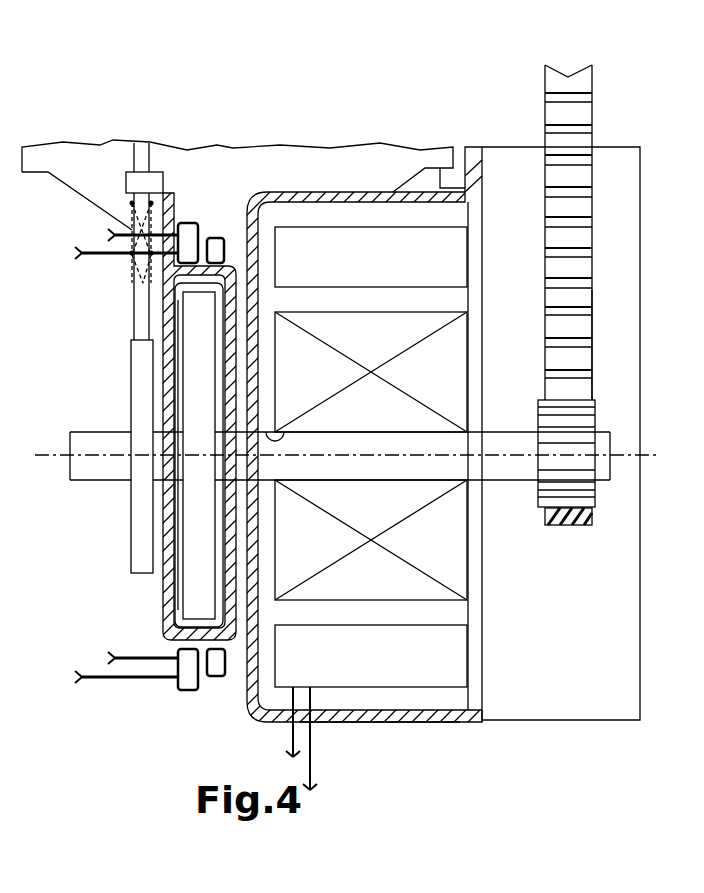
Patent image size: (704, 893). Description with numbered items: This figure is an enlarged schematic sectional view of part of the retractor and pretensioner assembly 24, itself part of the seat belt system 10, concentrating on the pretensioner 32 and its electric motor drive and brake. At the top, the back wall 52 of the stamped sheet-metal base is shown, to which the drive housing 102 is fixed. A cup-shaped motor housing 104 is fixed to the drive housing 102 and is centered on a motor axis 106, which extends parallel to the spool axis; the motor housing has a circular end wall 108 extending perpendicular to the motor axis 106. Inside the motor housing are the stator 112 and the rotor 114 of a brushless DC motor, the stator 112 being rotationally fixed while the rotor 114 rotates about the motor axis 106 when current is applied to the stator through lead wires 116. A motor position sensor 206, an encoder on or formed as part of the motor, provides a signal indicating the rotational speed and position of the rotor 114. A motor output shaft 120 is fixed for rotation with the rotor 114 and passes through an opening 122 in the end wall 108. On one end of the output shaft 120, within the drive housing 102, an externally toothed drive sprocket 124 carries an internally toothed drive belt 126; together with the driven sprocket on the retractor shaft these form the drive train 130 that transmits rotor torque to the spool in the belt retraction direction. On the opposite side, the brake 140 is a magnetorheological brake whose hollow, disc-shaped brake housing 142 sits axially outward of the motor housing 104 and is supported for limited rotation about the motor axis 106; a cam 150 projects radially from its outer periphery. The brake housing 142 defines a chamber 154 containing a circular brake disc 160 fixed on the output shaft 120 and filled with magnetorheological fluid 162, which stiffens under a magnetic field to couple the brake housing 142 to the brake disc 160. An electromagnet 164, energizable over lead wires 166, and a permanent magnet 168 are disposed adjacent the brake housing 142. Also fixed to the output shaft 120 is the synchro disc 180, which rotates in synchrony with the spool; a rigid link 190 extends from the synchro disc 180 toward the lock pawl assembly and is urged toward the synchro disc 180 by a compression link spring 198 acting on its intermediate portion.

The power tool motor assembly 10 is at (555, 792).
The retractor and pretensioner assembly 24 is at (492, 774).
The pretensioner 32 is at (447, 768).
The back wall 52 is at (43, 153).
The drive housing 102 is at (603, 720).
The motor housing 104 is at (373, 722).
The motor axis 106 is at (653, 455).
The end wall 108 is at (244, 690).
The stator 112 is at (352, 226).
The rotor 114 is at (468, 556).
The lead wires 116 is at (312, 738).
The motor output shaft 120 is at (85, 445).
The opening 122 is at (280, 432).
The drive sprocket 124 is at (588, 485).
The drive belt 126 is at (593, 302).
The drive train 130 is at (602, 128).
The brake 140 is at (122, 612).
The brake housing 142 is at (163, 598).
The cam 150 is at (126, 173).
The chamber 154 is at (178, 558).
The brake disc 160 is at (200, 512).
The magnetorheological fluid 162 is at (180, 533).
The electromagnet 164 is at (190, 230).
The lead wires 166 is at (112, 256).
The permanent magnet 168 is at (222, 250).
The synchro disc 180 is at (145, 366).
The link 190 is at (140, 305).
The link spring 198 is at (130, 210).
The motor position sensor 206 is at (395, 430).